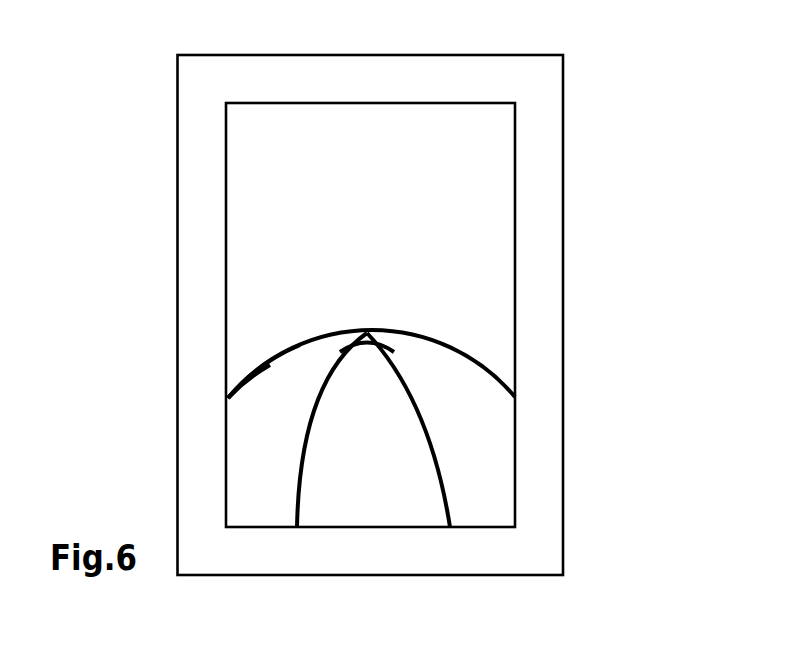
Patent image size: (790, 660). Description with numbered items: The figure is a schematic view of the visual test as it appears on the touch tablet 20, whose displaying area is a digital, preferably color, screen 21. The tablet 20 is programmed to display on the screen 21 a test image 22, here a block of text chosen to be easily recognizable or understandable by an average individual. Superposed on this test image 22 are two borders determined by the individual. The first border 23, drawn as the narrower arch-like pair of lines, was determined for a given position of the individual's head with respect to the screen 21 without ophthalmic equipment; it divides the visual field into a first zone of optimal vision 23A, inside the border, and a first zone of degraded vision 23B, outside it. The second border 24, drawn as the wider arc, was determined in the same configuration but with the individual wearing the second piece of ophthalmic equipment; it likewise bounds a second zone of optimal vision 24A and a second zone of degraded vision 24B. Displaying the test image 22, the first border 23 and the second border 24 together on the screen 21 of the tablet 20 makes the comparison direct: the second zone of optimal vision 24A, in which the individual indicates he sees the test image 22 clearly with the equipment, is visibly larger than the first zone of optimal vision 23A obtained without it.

The tablet 20 is at (575, 124).
The screen 21 is at (238, 123).
The test image 22 is at (412, 183).
The first border 23 is at (305, 437).
The first zone of optimal vision 23A is at (420, 457).
The first zone of degraded vision 23B is at (377, 278).
The second border 24 is at (498, 383).
The second zone of optimal vision 24A is at (305, 390).
The second zone of degraded vision 24B is at (325, 228).